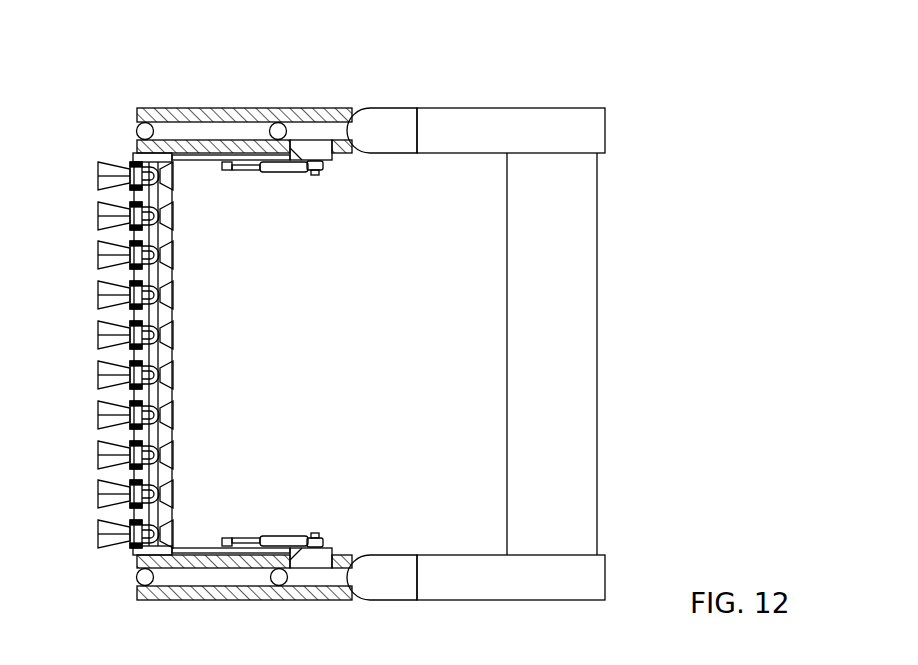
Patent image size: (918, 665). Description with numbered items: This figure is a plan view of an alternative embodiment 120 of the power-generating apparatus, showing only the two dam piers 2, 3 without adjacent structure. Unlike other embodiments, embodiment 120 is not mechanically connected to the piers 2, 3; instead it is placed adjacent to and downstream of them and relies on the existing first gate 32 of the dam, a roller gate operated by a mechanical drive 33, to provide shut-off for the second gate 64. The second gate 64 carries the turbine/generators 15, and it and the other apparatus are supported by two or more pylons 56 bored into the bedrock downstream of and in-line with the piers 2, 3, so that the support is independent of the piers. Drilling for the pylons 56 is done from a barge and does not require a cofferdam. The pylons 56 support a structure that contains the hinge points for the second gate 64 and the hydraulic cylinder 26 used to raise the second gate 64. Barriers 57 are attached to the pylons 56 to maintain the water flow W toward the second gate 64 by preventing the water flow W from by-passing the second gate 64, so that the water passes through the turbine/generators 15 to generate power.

The alternative embodiment 120 is at (476, 305).
The pylons 56 is at (146, 123).
The barriers 57 is at (236, 147).
The hydraulic cylinder 26 is at (293, 172).
The turbine/generators 15 is at (88, 161).
The second gate 64 is at (191, 553).
The pier 3 is at (392, 144).
The mechanical drive 33 is at (555, 144).
The first gate 32 is at (568, 368).
The pier 2 is at (392, 591).
The water flow W is at (314, 353).